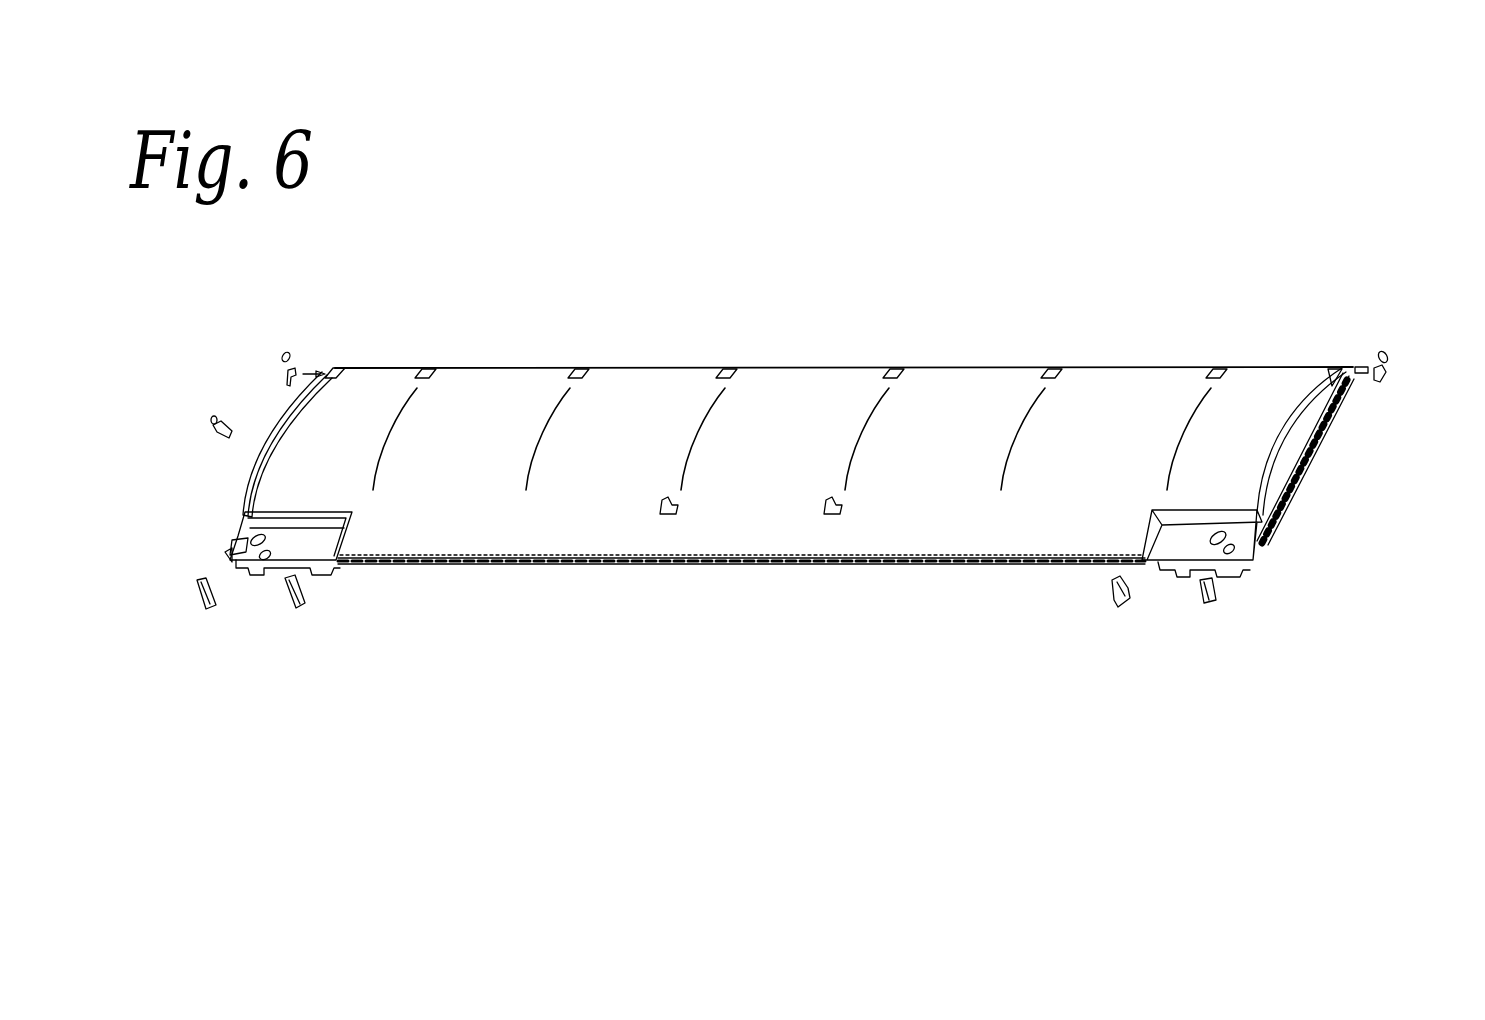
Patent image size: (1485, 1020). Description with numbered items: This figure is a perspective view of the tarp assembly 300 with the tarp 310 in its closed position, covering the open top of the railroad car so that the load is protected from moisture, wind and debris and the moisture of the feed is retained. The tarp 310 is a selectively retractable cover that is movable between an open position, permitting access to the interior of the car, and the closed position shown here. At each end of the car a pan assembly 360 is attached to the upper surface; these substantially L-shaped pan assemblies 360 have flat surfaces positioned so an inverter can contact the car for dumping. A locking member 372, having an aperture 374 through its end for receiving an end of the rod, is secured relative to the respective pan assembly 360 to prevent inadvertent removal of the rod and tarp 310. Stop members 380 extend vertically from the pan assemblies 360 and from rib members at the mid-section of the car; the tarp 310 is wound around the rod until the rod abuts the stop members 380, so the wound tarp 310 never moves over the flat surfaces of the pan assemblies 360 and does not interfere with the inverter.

The tarp assembly 300 is at (478, 216).
The tarp 310 is at (668, 367).
The pan assembly 360 is at (1297, 492).
The locking member 372 is at (1380, 383).
The aperture 374 is at (1388, 355).
The stop member 380 is at (835, 497).